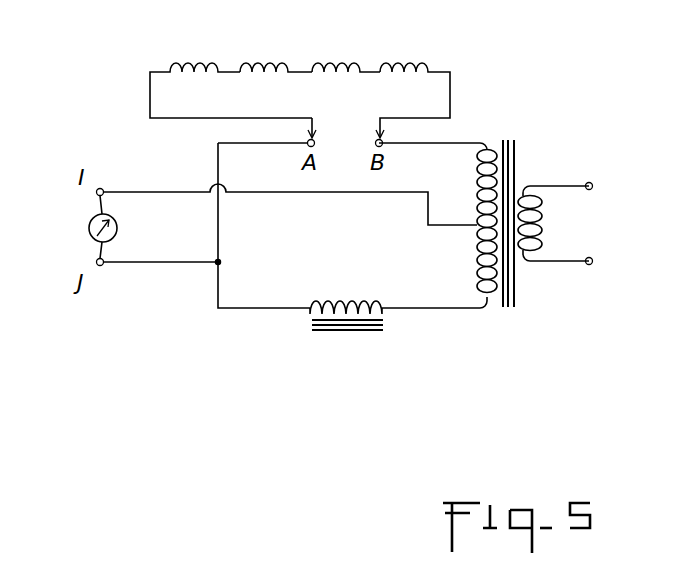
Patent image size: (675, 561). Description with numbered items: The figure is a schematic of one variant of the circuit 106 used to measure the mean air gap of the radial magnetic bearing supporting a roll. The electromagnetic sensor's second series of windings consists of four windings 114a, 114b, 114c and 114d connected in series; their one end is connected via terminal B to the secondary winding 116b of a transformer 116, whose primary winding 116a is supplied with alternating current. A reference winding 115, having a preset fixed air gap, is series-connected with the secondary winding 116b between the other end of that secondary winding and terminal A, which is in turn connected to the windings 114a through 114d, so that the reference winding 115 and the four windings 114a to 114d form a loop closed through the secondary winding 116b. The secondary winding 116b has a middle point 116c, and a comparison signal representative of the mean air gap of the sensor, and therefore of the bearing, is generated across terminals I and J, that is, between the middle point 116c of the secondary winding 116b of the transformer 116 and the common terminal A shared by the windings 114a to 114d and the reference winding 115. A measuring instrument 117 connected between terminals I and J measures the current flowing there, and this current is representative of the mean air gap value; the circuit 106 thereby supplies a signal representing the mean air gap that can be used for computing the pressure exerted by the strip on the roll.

The circuit 106 is at (211, 311).
The winding 114a is at (197, 63).
The winding 114b is at (266, 63).
The winding 114c is at (337, 63).
The winding 114d is at (405, 63).
The reference winding 115 is at (385, 314).
The transformer 116 is at (489, 206).
The primary winding 116a is at (540, 232).
The secondary winding 116b is at (478, 185).
The middle point 116c is at (466, 229).
The measuring instrument 117 is at (89, 228).